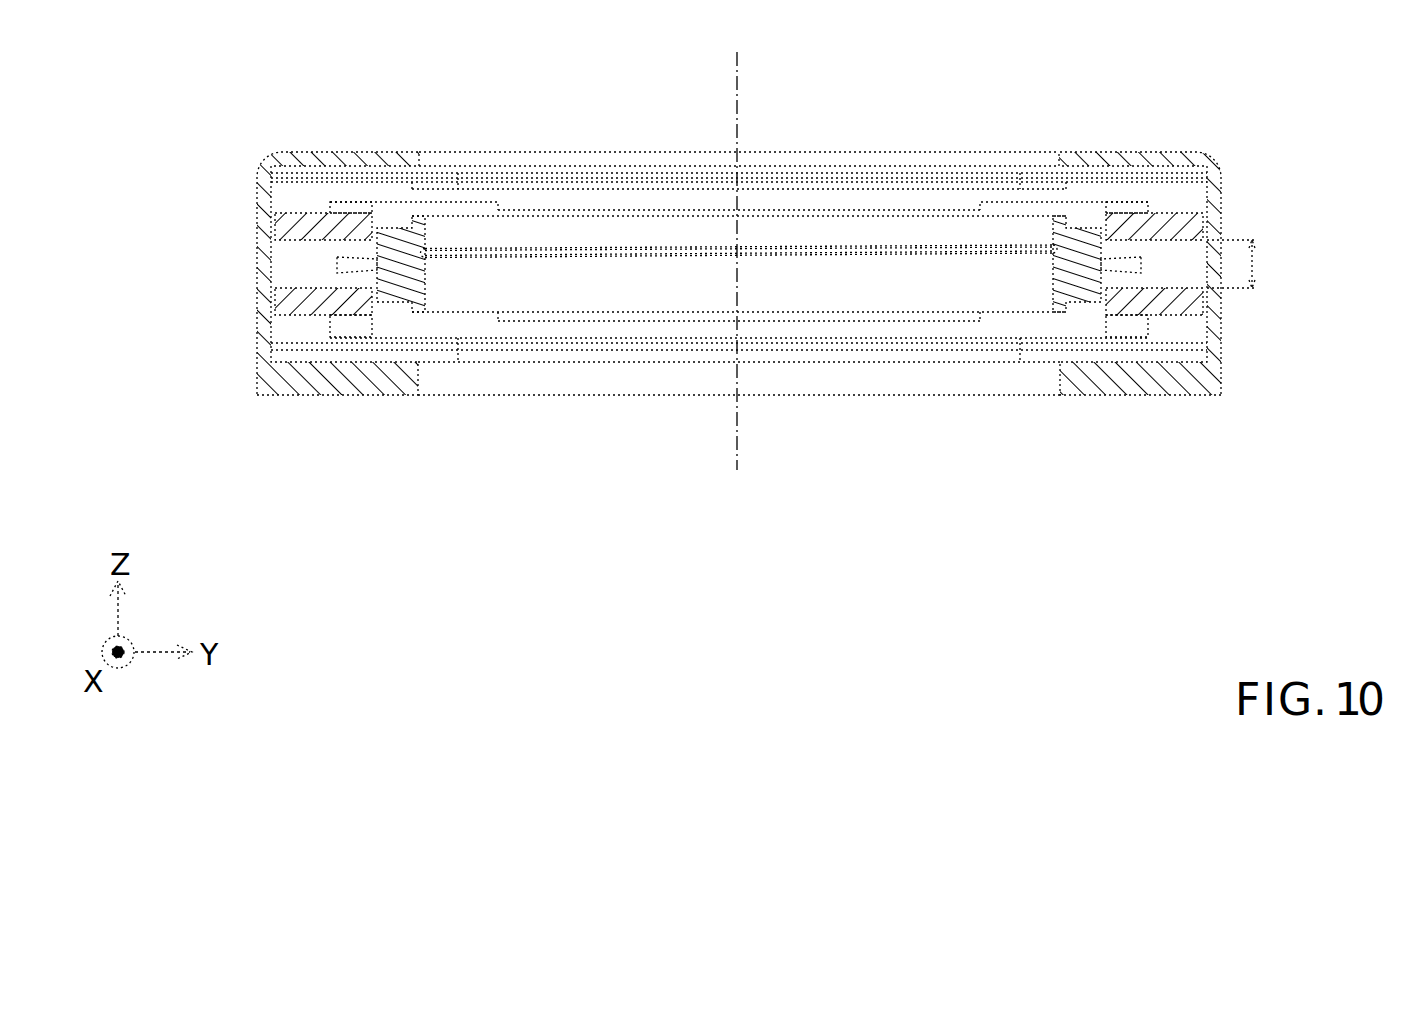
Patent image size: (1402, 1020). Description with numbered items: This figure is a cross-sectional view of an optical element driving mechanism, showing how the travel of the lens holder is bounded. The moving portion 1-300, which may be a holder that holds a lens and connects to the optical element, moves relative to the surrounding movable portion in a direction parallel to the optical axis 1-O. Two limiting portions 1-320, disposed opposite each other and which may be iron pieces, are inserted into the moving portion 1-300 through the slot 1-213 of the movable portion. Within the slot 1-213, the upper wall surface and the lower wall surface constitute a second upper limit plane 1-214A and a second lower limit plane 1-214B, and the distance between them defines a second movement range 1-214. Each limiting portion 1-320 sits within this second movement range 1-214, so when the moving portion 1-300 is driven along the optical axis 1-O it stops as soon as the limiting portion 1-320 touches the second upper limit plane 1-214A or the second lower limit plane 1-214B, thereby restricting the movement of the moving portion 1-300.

The optical axis 1-O is at (738, 246).
The moving portion 1-300 is at (582, 234).
The limiting portion 1-320 is at (362, 270).
The slot 1-213 is at (293, 265).
The second upper limit plane 1-214A is at (292, 242).
The second lower limit plane 1-214B is at (292, 286).
The second movement range 1-214 is at (1271, 264).